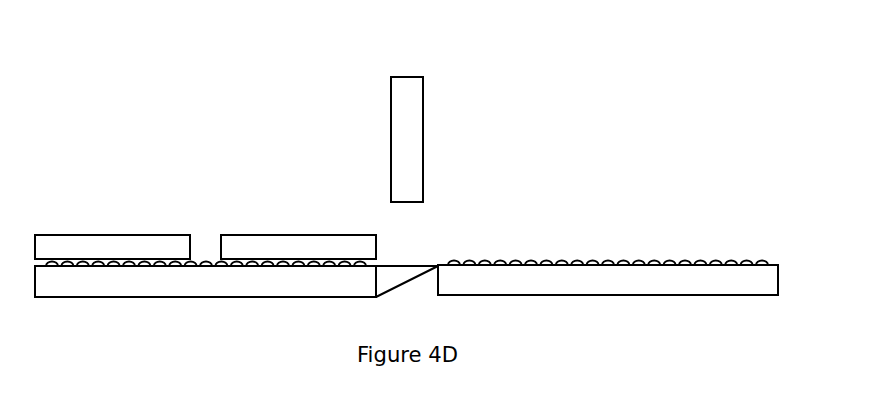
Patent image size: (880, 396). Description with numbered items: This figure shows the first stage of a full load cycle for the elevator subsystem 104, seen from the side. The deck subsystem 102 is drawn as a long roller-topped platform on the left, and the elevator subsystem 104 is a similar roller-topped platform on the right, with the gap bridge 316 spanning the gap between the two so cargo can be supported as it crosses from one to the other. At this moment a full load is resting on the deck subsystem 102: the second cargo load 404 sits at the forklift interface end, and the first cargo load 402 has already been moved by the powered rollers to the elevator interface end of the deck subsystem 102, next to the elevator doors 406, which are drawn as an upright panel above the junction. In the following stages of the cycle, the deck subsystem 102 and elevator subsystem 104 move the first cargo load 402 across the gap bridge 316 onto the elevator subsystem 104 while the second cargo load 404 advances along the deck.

The deck subsystem 102 is at (127, 297).
The elevator subsystem 104 is at (530, 295).
The gap bridge 316 is at (392, 288).
The first cargo load 402 is at (237, 235).
The second cargo load 404 is at (50, 235).
The elevator doors 406 is at (423, 110).